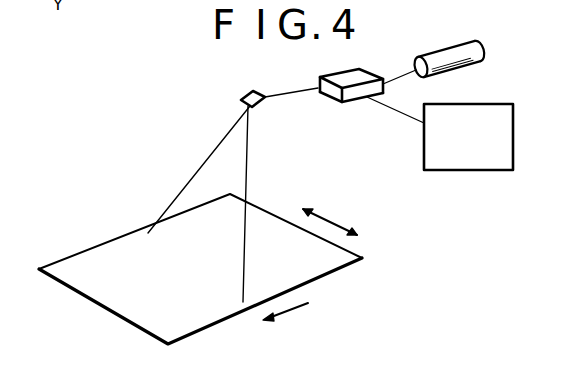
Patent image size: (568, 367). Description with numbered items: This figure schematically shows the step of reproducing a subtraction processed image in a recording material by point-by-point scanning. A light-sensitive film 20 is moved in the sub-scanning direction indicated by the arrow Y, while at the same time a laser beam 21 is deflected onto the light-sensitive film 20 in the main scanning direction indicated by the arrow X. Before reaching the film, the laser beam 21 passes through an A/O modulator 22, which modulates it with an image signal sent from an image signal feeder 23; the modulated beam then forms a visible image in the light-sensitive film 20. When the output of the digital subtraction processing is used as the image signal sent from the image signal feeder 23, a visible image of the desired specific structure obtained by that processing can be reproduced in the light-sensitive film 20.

The light-sensitive film 20 is at (336, 262).
The laser beam 21 is at (248, 168).
The A/O modulator 22 is at (353, 102).
The image signal feeder 23 is at (497, 170).